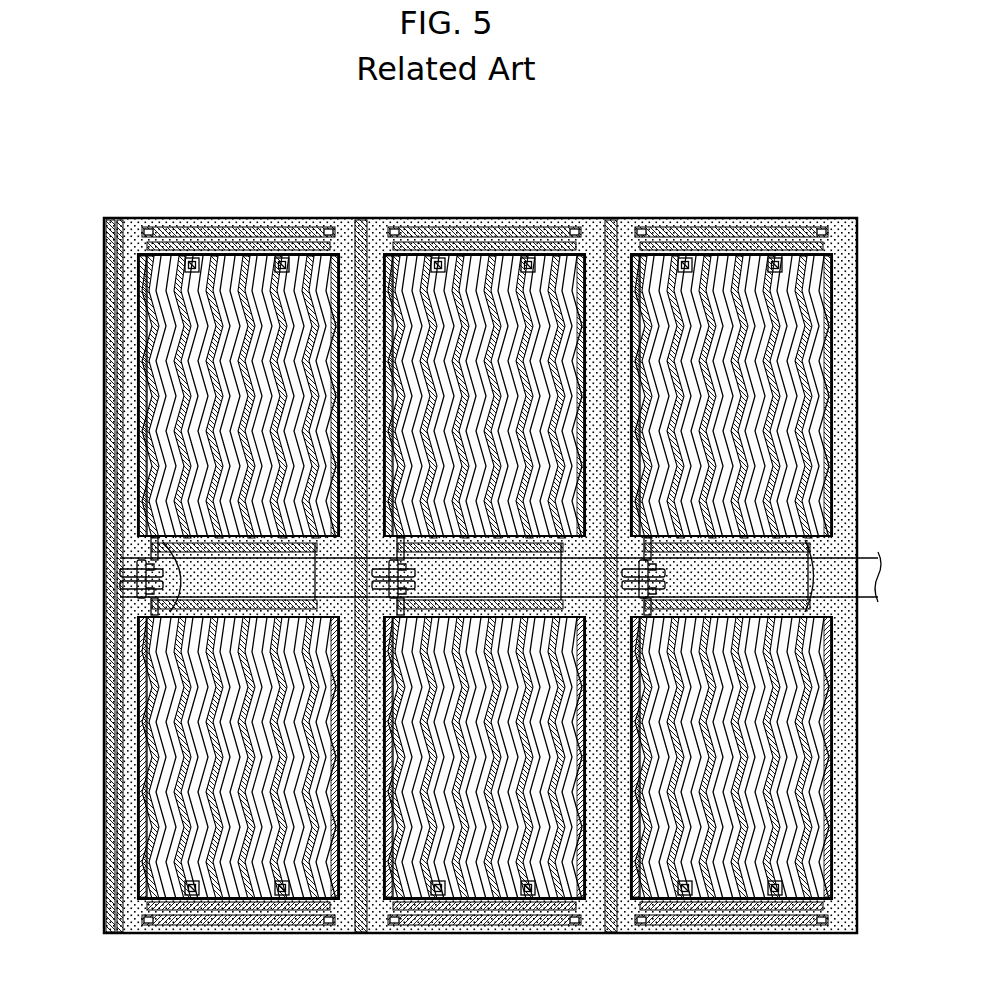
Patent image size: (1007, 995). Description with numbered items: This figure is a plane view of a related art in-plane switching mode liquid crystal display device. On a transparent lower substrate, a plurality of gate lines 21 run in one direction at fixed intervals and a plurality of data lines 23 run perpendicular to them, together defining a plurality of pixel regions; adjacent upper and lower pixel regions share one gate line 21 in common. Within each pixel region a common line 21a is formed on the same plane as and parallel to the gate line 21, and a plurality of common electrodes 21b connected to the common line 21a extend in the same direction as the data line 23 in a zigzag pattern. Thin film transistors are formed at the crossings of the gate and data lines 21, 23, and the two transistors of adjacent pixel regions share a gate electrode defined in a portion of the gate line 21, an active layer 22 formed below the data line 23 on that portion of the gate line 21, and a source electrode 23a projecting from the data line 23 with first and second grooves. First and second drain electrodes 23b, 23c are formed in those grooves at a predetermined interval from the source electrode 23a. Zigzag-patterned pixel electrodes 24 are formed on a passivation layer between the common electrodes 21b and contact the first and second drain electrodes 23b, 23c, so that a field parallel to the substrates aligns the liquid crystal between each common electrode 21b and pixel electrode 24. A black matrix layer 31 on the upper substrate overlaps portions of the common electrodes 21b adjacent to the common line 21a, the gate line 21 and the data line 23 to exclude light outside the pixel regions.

The gate line 21 is at (99, 556).
The common line 21a is at (185, 228).
The common electrode 21b is at (170, 297).
The active layer 22 is at (155, 623).
The data line 23 is at (125, 411).
The source electrode 23a is at (122, 573).
The first drain electrode 23b is at (158, 546).
The second drain electrode 23c is at (150, 608).
The pixel electrode 24 is at (158, 362).
The black matrix layer 31 is at (343, 250).